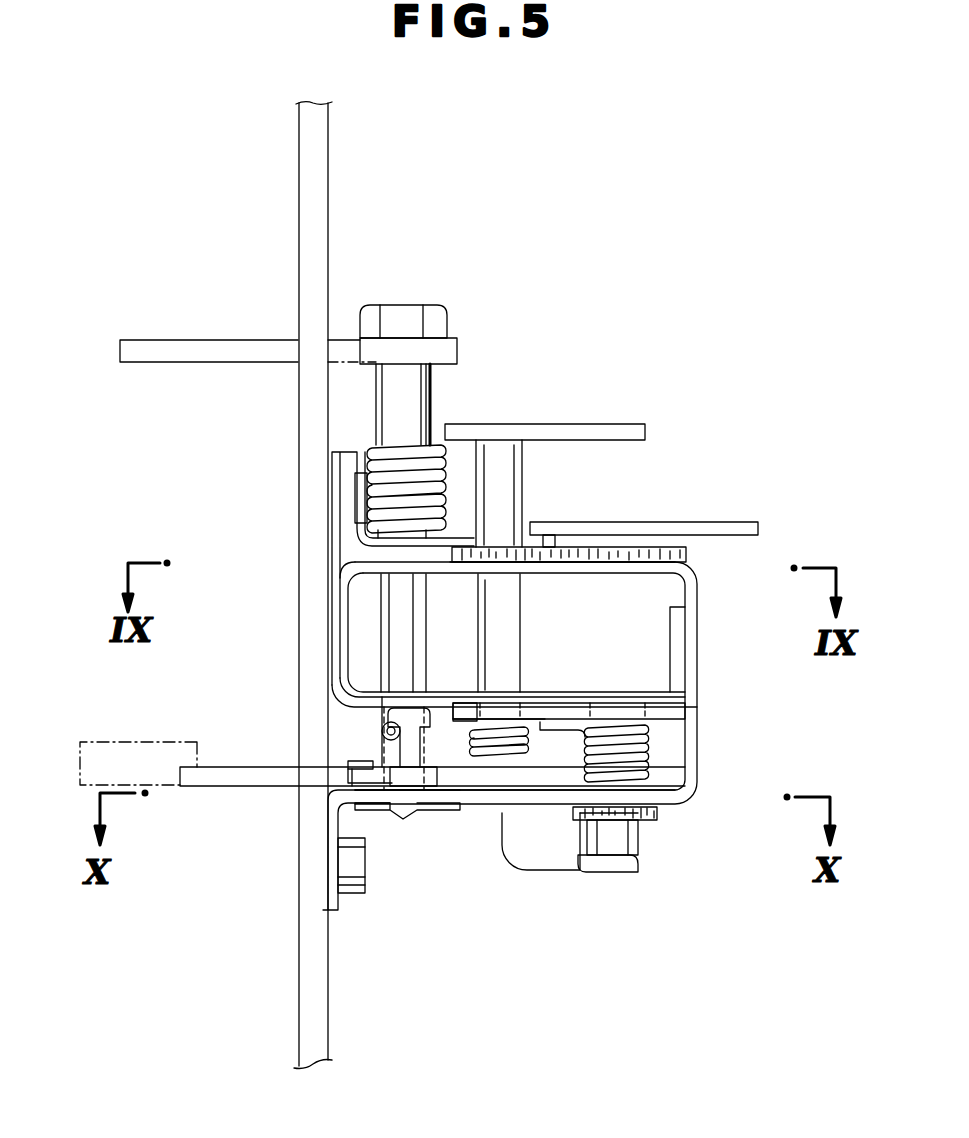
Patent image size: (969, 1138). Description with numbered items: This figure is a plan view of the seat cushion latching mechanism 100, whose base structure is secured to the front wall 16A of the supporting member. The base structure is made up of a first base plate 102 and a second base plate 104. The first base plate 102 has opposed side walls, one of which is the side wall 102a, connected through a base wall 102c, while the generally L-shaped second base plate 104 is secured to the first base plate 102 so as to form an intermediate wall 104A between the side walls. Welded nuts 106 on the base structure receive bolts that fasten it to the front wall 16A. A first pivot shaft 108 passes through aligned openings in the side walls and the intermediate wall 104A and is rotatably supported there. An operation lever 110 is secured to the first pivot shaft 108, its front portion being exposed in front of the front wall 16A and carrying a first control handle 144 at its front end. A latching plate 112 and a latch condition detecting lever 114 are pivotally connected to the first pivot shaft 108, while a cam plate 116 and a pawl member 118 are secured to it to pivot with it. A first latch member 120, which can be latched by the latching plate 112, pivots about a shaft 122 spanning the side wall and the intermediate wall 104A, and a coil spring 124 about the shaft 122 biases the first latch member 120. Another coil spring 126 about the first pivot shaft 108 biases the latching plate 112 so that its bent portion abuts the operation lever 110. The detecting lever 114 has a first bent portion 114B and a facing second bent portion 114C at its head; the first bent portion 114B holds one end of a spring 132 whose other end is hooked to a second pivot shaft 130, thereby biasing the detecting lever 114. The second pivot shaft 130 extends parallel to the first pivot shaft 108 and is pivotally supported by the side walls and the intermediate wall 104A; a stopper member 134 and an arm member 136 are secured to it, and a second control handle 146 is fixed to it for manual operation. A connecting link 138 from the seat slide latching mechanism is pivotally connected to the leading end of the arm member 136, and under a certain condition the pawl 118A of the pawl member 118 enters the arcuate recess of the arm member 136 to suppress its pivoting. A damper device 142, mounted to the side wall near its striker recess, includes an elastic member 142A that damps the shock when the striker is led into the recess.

The front wall 16A is at (300, 214).
The second control handle 146 is at (196, 340).
The second pivot shaft 130 is at (398, 305).
The arm member 136 is at (358, 541).
The welded nuts 106 is at (358, 496).
The second base plate 104 is at (322, 565).
The seat cushion latching mechanism 100 is at (553, 528).
The first base plate 102 is at (702, 600).
The side wall 102a is at (652, 563).
The base wall 102c is at (697, 645).
The first pivot shaft 108 is at (528, 425).
The cam plate 116 is at (578, 424).
The connecting link 138 is at (718, 522).
The pawl 118A is at (555, 547).
The pawl member 118 is at (500, 547).
The first latch member 120 is at (697, 712).
The latching plate 112 is at (462, 706).
The intermediate wall 104A is at (545, 700).
The shaft 122 is at (628, 692).
The coil spring 124 is at (652, 746).
The coil spring 126 is at (540, 745).
The first bent portion 114B is at (405, 708).
The spring 132 is at (388, 722).
The stopper member 134 is at (362, 763).
The operation lever 110 is at (243, 786).
The first control handle 144 is at (138, 742).
The second bent portion 114C is at (435, 792).
The latch condition detecting lever 114 is at (468, 806).
The elastic member 142A is at (640, 830).
The damper device 142 is at (565, 885).